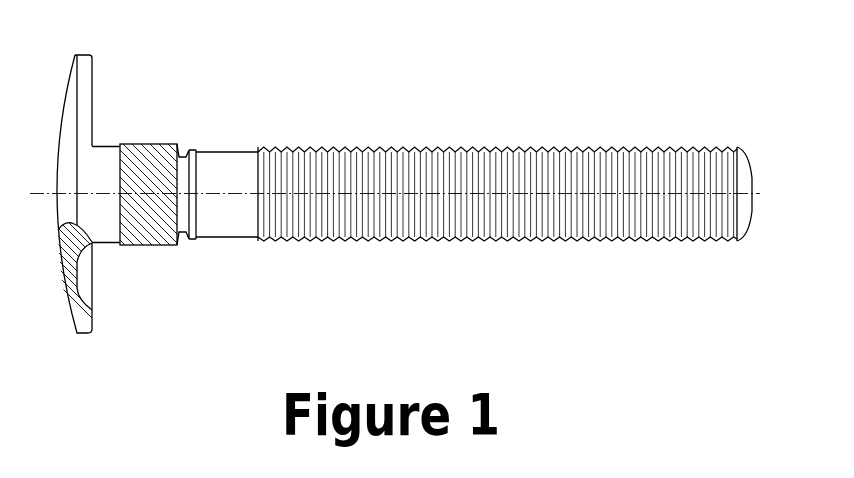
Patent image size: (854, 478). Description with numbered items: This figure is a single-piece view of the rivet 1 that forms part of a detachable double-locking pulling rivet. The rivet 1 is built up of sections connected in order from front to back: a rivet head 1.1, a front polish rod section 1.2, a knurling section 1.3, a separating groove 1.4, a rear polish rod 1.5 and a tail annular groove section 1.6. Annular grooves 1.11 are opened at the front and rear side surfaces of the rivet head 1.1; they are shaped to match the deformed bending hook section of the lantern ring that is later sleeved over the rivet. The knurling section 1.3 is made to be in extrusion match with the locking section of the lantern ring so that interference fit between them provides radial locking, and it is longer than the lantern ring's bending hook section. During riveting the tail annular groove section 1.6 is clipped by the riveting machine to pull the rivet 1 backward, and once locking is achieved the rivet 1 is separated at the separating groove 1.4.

The rivet 1 is at (707, 43).
The rivet head 1.1 is at (92, 78).
The annular grooves 1.11 is at (93, 297).
The front polish rod section 1.2 is at (98, 160).
The knurling section 1.3 is at (157, 247).
The separating groove 1.4 is at (187, 151).
The rear polish rod 1.5 is at (230, 217).
The tail annular groove section 1.6 is at (413, 147).